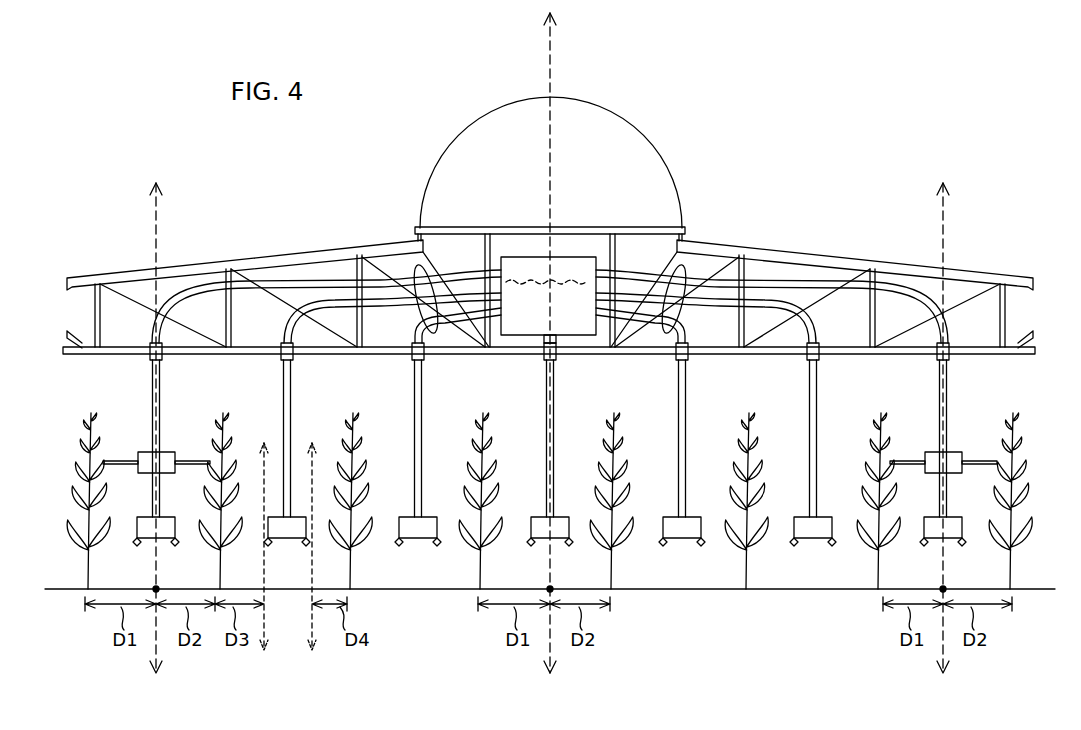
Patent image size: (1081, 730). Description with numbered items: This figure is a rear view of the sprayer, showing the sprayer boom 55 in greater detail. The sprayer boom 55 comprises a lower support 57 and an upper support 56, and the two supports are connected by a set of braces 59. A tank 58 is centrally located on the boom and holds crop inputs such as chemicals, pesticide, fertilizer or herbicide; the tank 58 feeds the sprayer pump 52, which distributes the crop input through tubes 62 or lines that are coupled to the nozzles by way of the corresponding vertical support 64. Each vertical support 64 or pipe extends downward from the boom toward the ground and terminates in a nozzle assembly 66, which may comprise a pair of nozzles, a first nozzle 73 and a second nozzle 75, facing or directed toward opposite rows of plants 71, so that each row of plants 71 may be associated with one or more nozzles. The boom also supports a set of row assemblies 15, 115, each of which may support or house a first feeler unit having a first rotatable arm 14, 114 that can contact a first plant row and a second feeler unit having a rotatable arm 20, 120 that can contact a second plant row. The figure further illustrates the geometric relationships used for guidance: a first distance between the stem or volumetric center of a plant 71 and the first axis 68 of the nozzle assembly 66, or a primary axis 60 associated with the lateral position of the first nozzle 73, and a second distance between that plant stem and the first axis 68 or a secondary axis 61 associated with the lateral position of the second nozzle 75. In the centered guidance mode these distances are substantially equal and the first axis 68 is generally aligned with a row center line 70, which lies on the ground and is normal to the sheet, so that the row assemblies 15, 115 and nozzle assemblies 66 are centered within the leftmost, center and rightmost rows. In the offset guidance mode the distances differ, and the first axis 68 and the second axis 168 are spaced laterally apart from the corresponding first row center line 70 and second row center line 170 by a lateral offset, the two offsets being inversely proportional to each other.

The first rotatable arm 14 is at (596, 430).
The first rotatable arm 114 is at (178, 455).
The row assembly 15 is at (548, 416).
The row assembly 115 is at (548, 416).
The rotatable arm 20 is at (519, 425).
The rotatable arm 120 is at (118, 460).
The sprayer pump 52 is at (526, 257).
The sprayer boom 55 is at (762, 163).
The upper support 56 is at (268, 256).
The lower support 57 is at (228, 355).
The tank 58 is at (645, 130).
The braces 59 is at (140, 300).
The primary axis 60 is at (266, 618).
The secondary axis 61 is at (314, 618).
The tubes 62 is at (416, 266).
The vertical support 64 is at (162, 370).
The nozzle assembly 66 is at (167, 530).
The first axis 68 is at (553, 58).
The second axis 168 is at (950, 222).
The row center line 70 is at (158, 596).
The second row center line 170 is at (945, 596).
The plant 71 is at (93, 566).
The first nozzle 73 is at (137, 537).
The second nozzle 75 is at (176, 537).